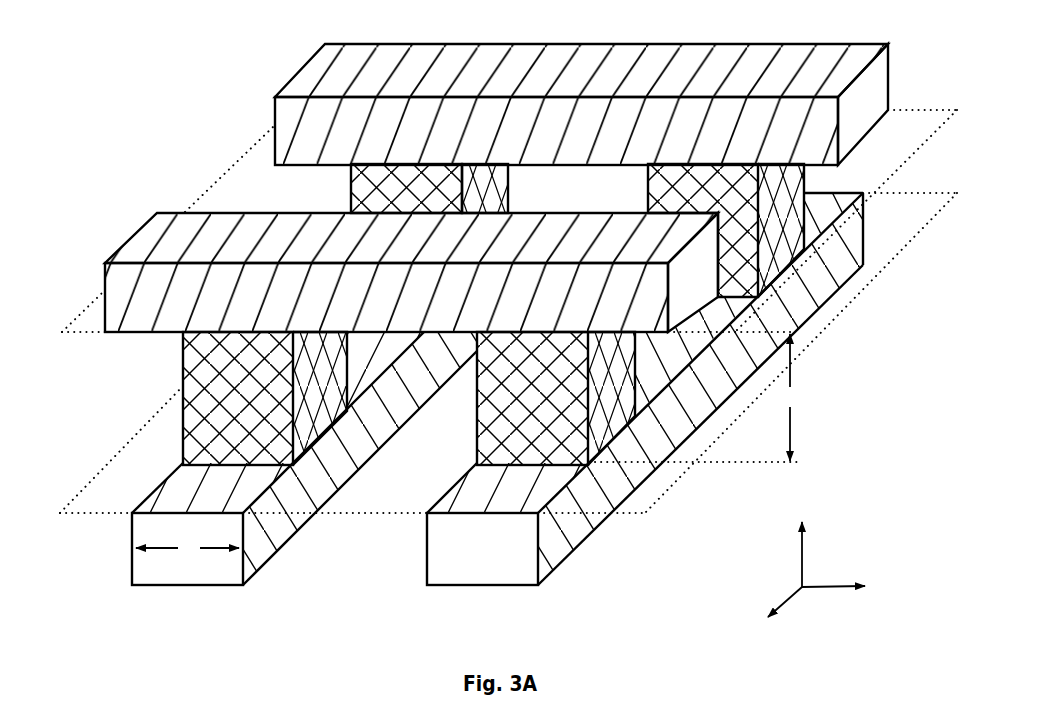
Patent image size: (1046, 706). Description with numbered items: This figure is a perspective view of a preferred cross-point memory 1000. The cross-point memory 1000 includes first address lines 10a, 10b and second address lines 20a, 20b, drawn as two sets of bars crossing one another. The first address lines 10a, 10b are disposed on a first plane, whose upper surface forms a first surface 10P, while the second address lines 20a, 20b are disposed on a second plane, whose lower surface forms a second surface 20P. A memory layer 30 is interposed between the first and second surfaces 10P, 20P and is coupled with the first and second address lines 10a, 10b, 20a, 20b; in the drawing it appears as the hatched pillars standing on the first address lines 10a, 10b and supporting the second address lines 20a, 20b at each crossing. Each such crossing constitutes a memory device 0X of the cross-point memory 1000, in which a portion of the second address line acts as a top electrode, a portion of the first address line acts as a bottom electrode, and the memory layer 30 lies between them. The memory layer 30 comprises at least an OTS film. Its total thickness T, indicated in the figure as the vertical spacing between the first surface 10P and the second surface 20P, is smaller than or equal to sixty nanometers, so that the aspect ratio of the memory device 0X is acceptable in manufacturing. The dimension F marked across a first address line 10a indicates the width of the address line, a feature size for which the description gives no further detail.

The cross-point memory 1000 is at (215, 67).
The first address line 10a is at (183, 573).
The first address line 10b is at (492, 573).
The second address line 20a is at (238, 227).
The second address line 20b is at (405, 58).
The memory layer 30 is at (184, 406).
The first surface 10P is at (929, 204).
The second surface 20P is at (928, 118).
The memory device 0X is at (104, 387).
The total thickness of the memory layer T is at (792, 397).
The feature width of conductive line F is at (187, 549).